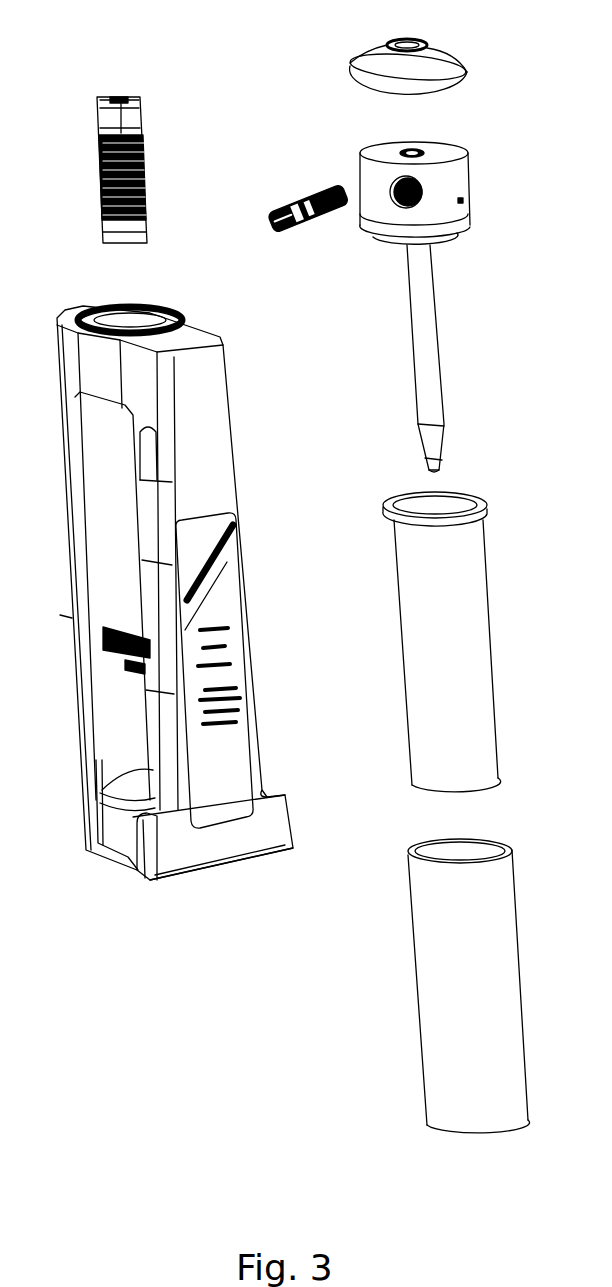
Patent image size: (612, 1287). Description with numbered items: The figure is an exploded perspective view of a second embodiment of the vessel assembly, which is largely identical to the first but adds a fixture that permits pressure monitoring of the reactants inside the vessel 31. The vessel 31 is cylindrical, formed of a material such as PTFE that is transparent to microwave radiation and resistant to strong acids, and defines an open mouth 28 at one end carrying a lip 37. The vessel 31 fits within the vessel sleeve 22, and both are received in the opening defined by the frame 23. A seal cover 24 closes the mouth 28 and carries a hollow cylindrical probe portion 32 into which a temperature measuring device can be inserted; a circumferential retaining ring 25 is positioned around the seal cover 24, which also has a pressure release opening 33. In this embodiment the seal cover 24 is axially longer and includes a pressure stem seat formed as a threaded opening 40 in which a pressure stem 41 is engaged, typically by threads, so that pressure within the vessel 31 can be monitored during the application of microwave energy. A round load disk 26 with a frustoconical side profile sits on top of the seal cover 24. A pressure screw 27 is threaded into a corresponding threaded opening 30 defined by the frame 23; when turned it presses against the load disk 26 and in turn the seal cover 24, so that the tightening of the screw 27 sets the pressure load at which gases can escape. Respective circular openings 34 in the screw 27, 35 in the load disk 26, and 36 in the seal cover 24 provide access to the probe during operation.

The vessel sleeve 22 is at (488, 993).
The frame 23 is at (198, 433).
The seal cover 24 is at (487, 244).
The circumferential retaining ring 25 is at (428, 193).
The load disk 26 is at (431, 51).
The pressure screw 27 is at (95, 163).
The open mouth 28 is at (432, 500).
The threaded opening 30 is at (140, 317).
The vessel 31 is at (431, 619).
The probe portion 32 is at (427, 315).
The pressure release opening 33 is at (463, 201).
The circular opening 34 is at (113, 97).
The circular opening 35 is at (410, 43).
The circular opening 36 is at (415, 150).
The lip 37 is at (487, 507).
The threaded opening 40 is at (393, 192).
The pressure stem 41 is at (307, 195).